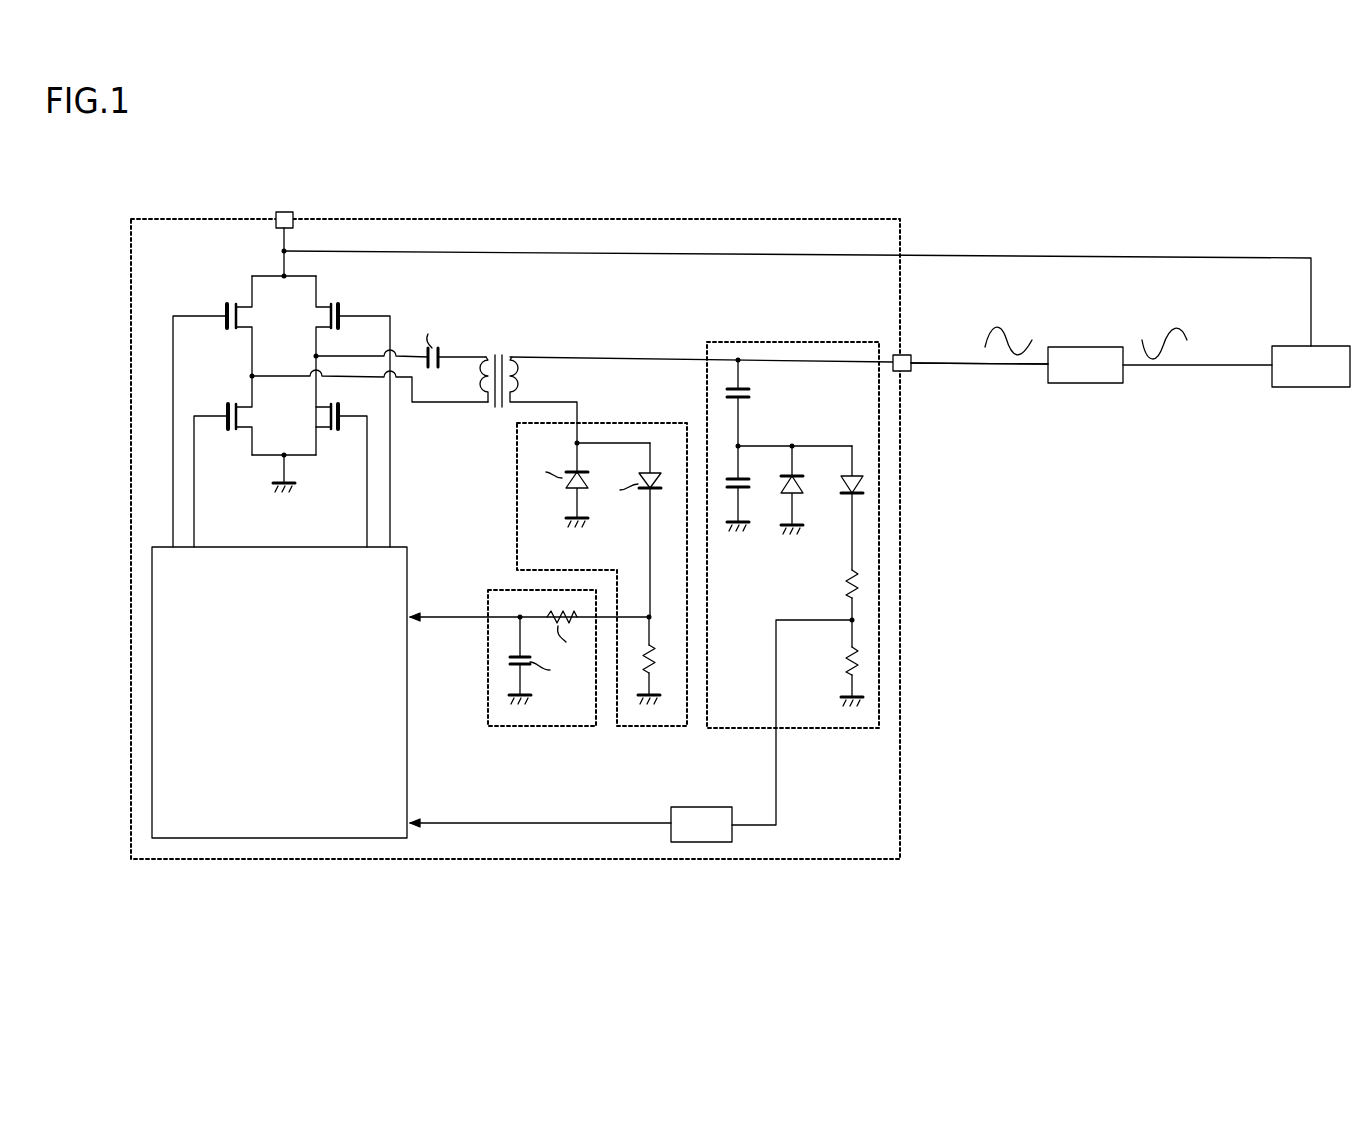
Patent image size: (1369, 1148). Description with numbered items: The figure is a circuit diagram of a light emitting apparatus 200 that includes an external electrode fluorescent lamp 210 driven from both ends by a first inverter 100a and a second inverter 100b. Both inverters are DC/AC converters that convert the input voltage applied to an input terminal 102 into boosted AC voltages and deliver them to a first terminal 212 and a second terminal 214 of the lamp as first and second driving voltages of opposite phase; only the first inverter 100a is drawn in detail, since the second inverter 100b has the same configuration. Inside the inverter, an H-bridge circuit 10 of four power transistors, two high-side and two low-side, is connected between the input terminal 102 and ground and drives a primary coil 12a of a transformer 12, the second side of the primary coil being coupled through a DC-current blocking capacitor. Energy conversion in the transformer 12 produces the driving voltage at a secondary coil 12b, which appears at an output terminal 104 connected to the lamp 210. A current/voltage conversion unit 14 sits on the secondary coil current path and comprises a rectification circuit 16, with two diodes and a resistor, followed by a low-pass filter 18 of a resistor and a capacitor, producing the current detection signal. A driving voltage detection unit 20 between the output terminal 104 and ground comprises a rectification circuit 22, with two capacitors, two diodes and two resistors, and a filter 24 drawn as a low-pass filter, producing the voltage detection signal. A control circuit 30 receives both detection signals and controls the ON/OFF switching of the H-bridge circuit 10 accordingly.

The light emitting apparatus 200 is at (731, 934).
The first inverter 100a is at (510, 860).
The second inverter 100b is at (1300, 387).
The input terminal 102 is at (292, 212).
The output terminal 104 is at (900, 371).
The H-bridge circuit 10 is at (212, 493).
The transformer 12 is at (514, 358).
The primary coil 12a is at (482, 358).
The secondary coil 12b is at (543, 379).
The current/voltage conversion unit 14 is at (587, 616).
The rectification circuit 16 is at (650, 727).
The filter 18 is at (542, 679).
The driving voltage detection unit 20 is at (775, 592).
The rectification circuit 22 is at (800, 729).
The filter 24 is at (752, 824).
The control circuit 30 is at (408, 547).
The EEFL 210 is at (1085, 383).
The first terminal 212 is at (1046, 364).
The second terminal 214 is at (1125, 366).